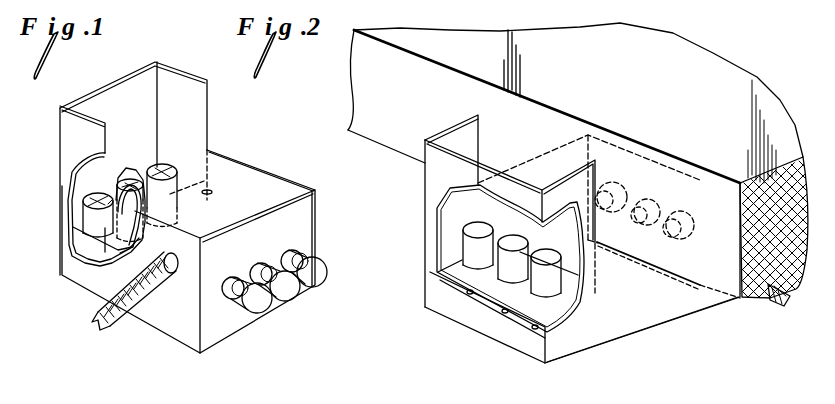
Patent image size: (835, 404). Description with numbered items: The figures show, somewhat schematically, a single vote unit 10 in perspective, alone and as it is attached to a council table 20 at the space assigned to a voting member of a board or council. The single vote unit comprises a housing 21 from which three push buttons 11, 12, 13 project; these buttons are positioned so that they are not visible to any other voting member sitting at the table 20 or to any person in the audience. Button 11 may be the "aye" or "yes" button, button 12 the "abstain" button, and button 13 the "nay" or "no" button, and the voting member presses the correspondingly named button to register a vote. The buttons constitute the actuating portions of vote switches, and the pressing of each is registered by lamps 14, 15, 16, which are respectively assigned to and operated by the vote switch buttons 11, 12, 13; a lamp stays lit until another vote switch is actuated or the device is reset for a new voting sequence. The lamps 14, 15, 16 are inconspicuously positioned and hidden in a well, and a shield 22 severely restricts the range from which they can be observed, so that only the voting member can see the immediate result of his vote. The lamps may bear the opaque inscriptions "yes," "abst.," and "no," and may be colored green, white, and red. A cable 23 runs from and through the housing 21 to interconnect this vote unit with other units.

In FIG. 1, the single vote unit 10 is at (171, 352).
In FIG. 2, the single vote unit 10 is at (464, 336).
In FIG. 1, the push button 11 is at (256, 303).
In FIG. 2, the push button 11 is at (705, 207).
In FIG. 1, the push button 12 is at (286, 293).
In FIG. 2, the push button 12 is at (660, 198).
In FIG. 1, the push button 13 is at (310, 283).
In FIG. 2, the push button 13 is at (618, 184).
In FIG. 1, the lamp 14 is at (83, 198).
In FIG. 2, the lamp 14 is at (548, 273).
In FIG. 1, the lamp 15 is at (132, 177).
In FIG. 2, the lamp 15 is at (510, 262).
In FIG. 1, the lamp 16 is at (165, 165).
In FIG. 2, the lamp 16 is at (463, 228).
In FIG. 2, the table 20 is at (398, 120).
In FIG. 1, the housing 21 is at (268, 182).
In FIG. 2, the housing 21 is at (605, 318).
In FIG. 2, the shield 22 is at (448, 165).
In FIG. 1, the cable 23 is at (101, 309).
In FIG. 2, the cable 23 is at (778, 302).